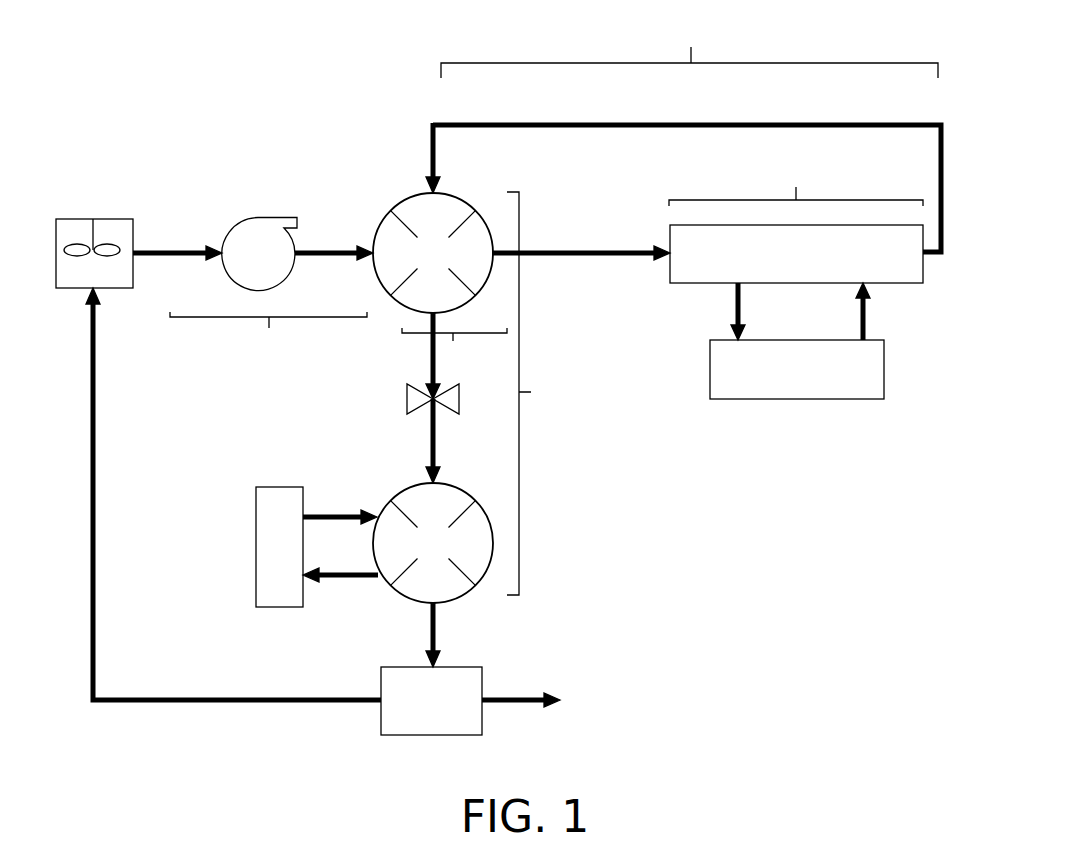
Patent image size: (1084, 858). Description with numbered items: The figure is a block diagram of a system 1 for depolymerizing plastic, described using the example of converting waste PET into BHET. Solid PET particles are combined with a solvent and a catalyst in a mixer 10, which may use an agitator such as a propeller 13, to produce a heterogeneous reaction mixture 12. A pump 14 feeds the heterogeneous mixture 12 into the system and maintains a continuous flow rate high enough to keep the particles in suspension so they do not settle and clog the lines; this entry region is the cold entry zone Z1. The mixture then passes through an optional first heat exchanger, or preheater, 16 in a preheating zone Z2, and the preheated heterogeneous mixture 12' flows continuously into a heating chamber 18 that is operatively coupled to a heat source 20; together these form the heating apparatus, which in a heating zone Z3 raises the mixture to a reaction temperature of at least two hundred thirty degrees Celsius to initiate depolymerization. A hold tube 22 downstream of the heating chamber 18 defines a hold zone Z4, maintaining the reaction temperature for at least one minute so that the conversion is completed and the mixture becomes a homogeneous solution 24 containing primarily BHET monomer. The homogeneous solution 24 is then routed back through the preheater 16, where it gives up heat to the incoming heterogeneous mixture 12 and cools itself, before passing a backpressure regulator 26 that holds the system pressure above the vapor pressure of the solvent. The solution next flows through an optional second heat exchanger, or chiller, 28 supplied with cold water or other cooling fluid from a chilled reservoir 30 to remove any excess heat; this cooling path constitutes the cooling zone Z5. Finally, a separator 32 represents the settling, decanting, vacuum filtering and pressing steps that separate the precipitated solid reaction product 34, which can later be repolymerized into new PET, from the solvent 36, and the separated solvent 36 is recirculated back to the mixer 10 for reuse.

The system 1 is at (137, 97).
The mixer 10 is at (80, 283).
The heterogeneous reaction mixture 12 is at (253, 229).
The preheated heterogeneous mixture 12' is at (581, 237).
The propeller 13 is at (102, 243).
The pump 14 is at (245, 269).
The first heat exchanger (preheater) 16 is at (420, 262).
The heating chamber 18 is at (783, 268).
The heat source 20 is at (784, 382).
The hold tube 22 is at (695, 122).
The homogeneous solution 24 is at (429, 166).
The backpressure regulator 26 is at (407, 399).
The second heat exchanger (chiller) 28 is at (420, 555).
The chilled reservoir 30 is at (267, 559).
The separator 32 is at (418, 716).
The solid reaction product 34 is at (509, 698).
The solvent 36 is at (125, 700).
The cold entry zone Z1 is at (268, 338).
The preheating zone Z2 is at (454, 351).
The heating zone Z3 is at (796, 180).
The hold zone Z4 is at (689, 47).
The cooling zone Z5 is at (541, 393).